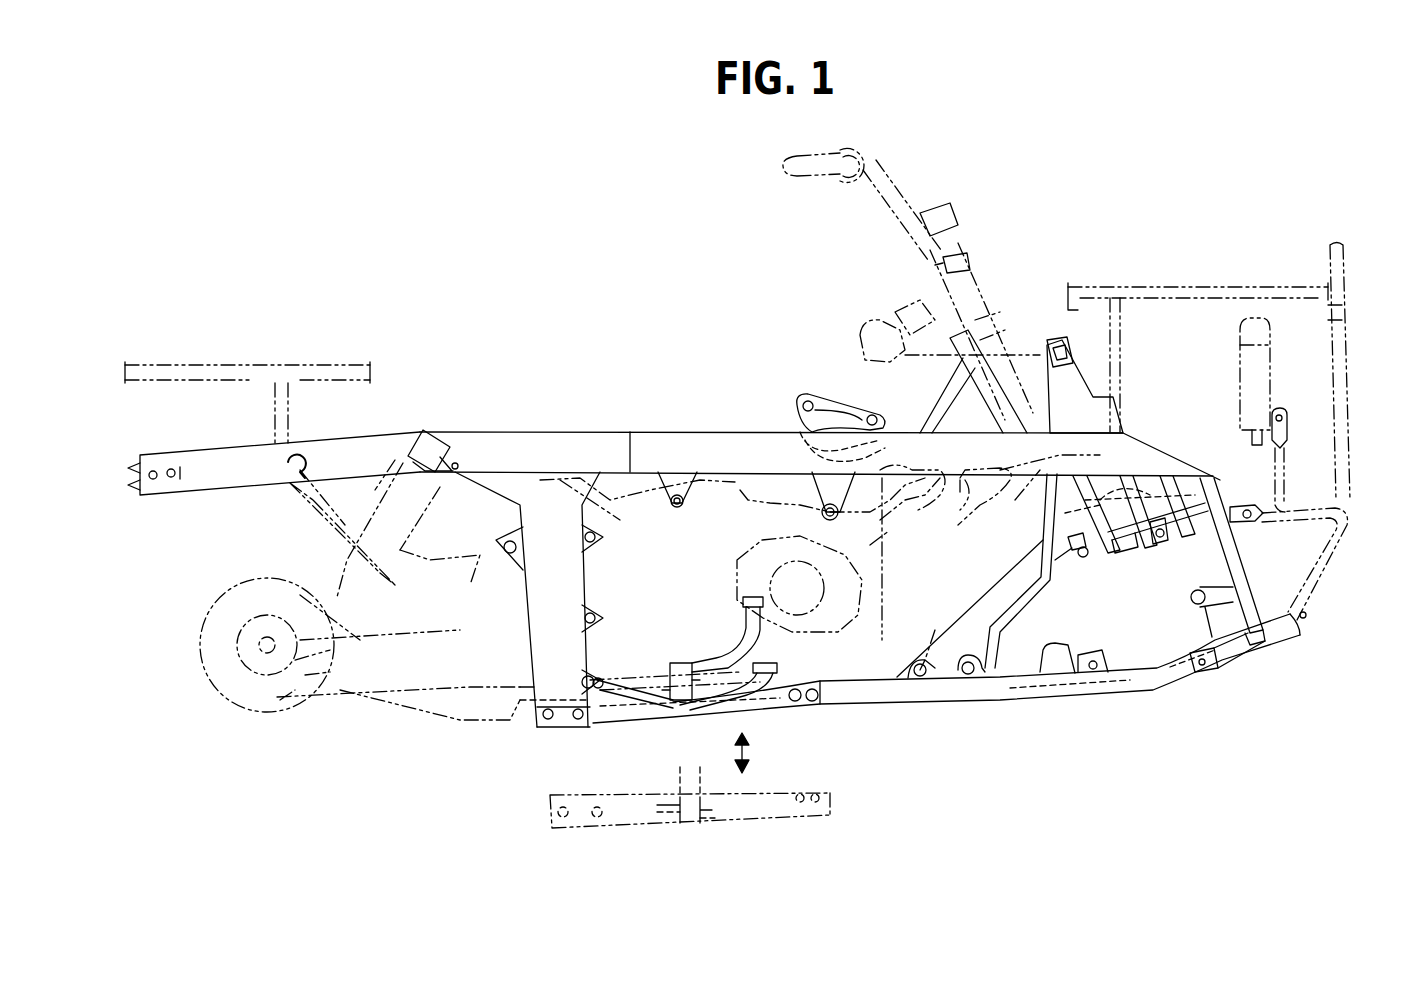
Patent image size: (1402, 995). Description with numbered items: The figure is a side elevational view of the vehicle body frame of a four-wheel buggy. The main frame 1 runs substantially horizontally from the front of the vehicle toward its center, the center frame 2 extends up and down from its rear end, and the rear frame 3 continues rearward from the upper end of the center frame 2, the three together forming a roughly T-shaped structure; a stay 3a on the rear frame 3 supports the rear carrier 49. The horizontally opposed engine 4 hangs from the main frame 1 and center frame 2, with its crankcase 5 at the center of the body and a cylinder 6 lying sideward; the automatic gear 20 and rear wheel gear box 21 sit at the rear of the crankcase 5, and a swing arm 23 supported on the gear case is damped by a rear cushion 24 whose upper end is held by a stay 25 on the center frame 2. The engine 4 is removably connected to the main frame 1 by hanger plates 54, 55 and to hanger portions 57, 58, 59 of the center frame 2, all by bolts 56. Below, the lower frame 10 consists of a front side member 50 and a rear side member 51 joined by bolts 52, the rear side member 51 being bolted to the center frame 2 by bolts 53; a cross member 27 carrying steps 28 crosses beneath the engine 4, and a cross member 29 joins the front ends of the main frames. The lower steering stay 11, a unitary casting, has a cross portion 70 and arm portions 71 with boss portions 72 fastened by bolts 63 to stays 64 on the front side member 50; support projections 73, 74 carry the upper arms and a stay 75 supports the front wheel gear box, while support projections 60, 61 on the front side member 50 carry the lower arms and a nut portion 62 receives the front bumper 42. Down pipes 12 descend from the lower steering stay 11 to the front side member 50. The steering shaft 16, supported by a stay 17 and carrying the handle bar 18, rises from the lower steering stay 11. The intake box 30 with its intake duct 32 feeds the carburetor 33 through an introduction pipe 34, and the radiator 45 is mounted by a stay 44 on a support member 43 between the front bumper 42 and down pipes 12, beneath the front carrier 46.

The main frame 1 is at (715, 442).
The center frame 2 is at (545, 478).
The rear frame 3 is at (206, 485).
The stay 3a is at (290, 405).
The engine 4 is at (735, 495).
The crankcase 5 is at (854, 690).
The cylinder 6 is at (870, 607).
The lower frame 10 is at (1060, 712).
The lower steering stay 11 is at (1040, 598).
The down pipe 12 is at (1240, 545).
The steering shaft 16 is at (980, 278).
The stay 17 is at (965, 360).
The handle bar 18 is at (900, 190).
The automatic gear 20 is at (625, 476).
The rear wheel gear box 21 is at (255, 720).
The swing arm 23 is at (388, 690).
The rear cushion 24 is at (412, 520).
The stay 25 is at (440, 453).
The cross member 27 is at (692, 830).
The step 28 is at (683, 660).
The cross member 29 is at (1100, 385).
The intake box 30 is at (858, 328).
The intake duct 32 is at (897, 305).
The carburetor 33 is at (907, 522).
The introduction pipe 34 is at (1010, 482).
The front bumper 42 is at (1348, 430).
The support member 43 is at (1310, 510).
The stay 44 is at (1268, 468).
The radiator 45 is at (1233, 365).
The front carrier 46 is at (1217, 283).
The rear carrier 49 is at (212, 362).
The front side member 50 is at (943, 697).
The rear side member 51 is at (770, 706).
The bolt 52 is at (803, 703).
The bolt 53 is at (553, 728).
The hanger plate 54 is at (816, 475).
The hanger plate 55 is at (677, 480).
The bolt 56 is at (820, 512).
The hanger portion 57 is at (590, 560).
The hanger portion 58 is at (290, 653).
The hanger portion 59 is at (600, 650).
The support projection 60 is at (1240, 612).
The support projection 61 is at (1085, 655).
The nut portion 62 is at (1205, 675).
The bolt 63 is at (918, 682).
The stay 64 is at (950, 630).
The cross portion 70 is at (1175, 470).
The arm portion 71 is at (1008, 575).
The boss portion 72 is at (985, 648).
The support projection 73 is at (1188, 537).
The support projection 74 is at (1098, 555).
The stay 75 is at (1147, 548).